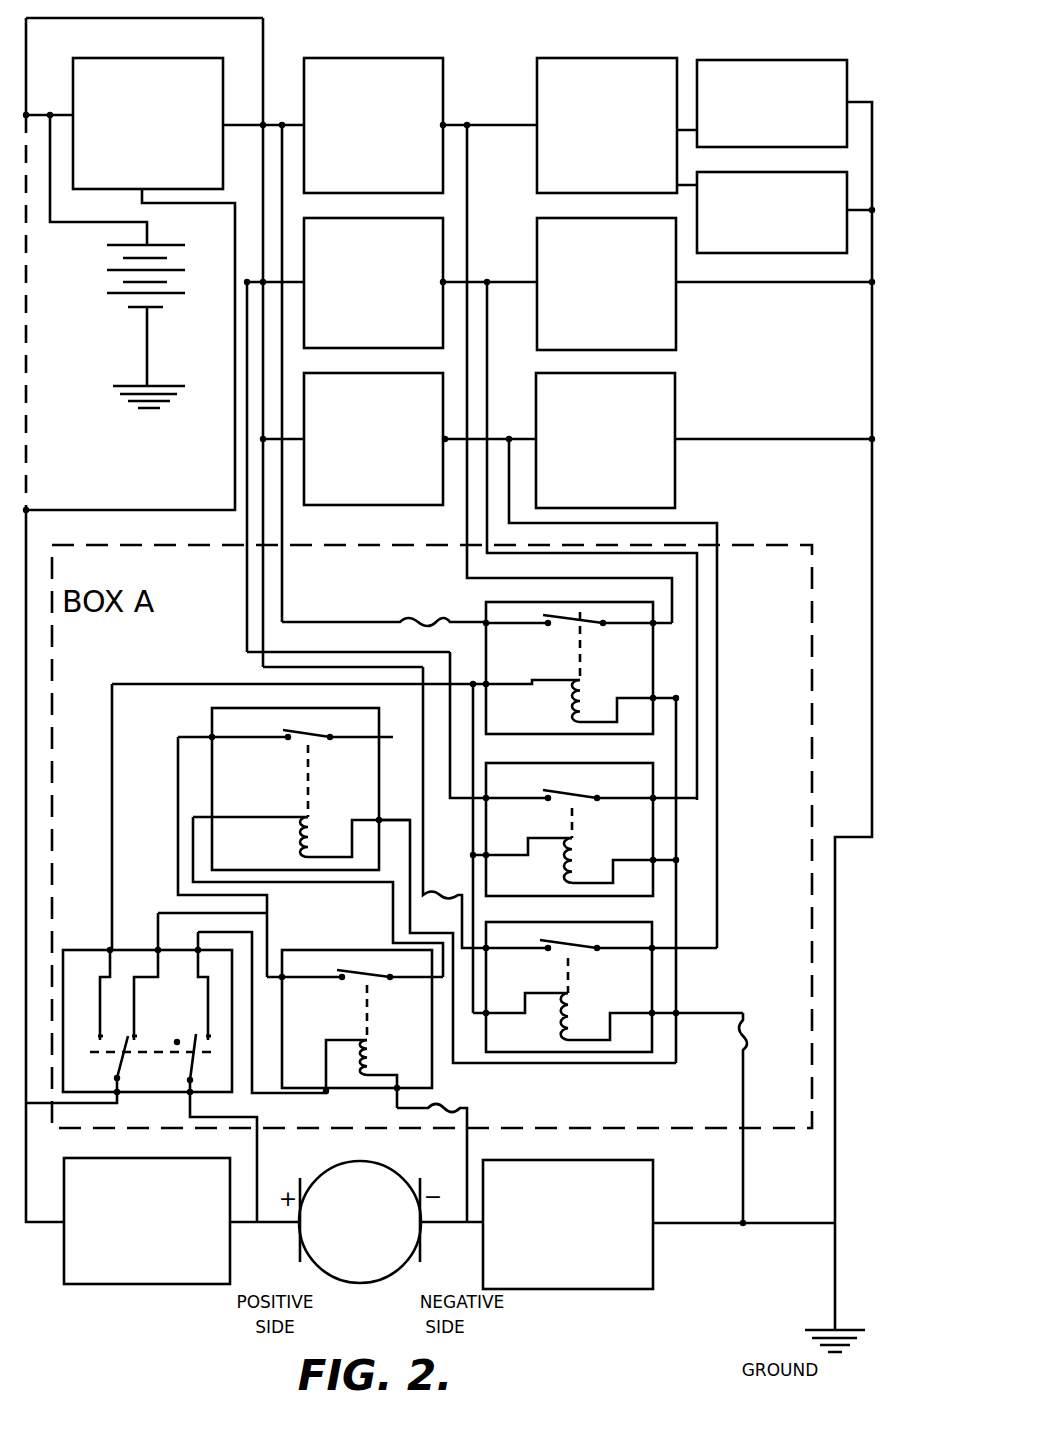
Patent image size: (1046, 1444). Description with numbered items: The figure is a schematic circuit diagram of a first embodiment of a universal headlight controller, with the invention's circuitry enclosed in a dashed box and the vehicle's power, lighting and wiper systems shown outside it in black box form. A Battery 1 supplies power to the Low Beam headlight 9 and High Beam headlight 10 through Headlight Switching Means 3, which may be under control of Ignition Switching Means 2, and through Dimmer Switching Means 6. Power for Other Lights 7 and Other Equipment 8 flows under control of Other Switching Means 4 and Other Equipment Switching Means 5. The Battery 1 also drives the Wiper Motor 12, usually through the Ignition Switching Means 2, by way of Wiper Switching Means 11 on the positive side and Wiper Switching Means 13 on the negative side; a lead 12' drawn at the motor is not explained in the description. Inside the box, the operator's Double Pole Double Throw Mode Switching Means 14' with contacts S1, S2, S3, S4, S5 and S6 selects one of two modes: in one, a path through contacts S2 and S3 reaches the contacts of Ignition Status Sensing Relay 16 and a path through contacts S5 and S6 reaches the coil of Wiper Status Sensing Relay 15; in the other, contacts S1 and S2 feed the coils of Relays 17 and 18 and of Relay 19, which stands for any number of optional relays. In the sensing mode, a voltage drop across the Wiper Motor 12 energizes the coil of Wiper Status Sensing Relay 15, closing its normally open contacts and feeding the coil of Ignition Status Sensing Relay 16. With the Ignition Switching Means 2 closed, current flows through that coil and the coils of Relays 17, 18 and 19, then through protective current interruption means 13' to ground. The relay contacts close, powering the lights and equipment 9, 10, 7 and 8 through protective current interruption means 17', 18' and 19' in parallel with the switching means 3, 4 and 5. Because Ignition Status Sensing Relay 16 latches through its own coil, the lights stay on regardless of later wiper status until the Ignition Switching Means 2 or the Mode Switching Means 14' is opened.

The battery 1 is at (106, 297).
The ignition switching means 2 is at (148, 123).
The headlight switching means 3 is at (373, 125).
The other switching means 4 is at (373, 283).
The other equipment switching means 5 is at (373, 439).
The dimmer switching means 6 is at (607, 125).
The other lights 7 is at (606, 284).
The other equipment 8 is at (605, 440).
The low beam headlight 9 is at (772, 103).
The high beam headlight 10 is at (772, 212).
The wiper switching means 11 is at (147, 1221).
The wiper motor 12 is at (360, 1222).
The wiper switching means 13 is at (568, 1224).
The double pole double throw mode switching means 14' is at (146, 1002).
The wiper status sensing relay 15 is at (322, 948).
The ignition status sensing relay 16 is at (205, 720).
The relay 17 is at (586, 668).
The relay 18 is at (585, 817).
The relay 19 is at (608, 974).
The protective current interruption means 17' is at (384, 604).
The protective current interruption means 18' is at (457, 739).
The protective current interruption means 19' is at (449, 807).
The wiper motor negative side wire 12' is at (443, 1154).
The protective current interruption means 13' is at (723, 1118).
The mode switch contact S1 is at (96, 1038).
The mode switch contact S2 is at (110, 1080).
The mode switch contact S3 is at (130, 1036).
The mode switch contact S4 is at (172, 1040).
The mode switch contact S5 is at (184, 1081).
The mode switch contact S6 is at (204, 1036).